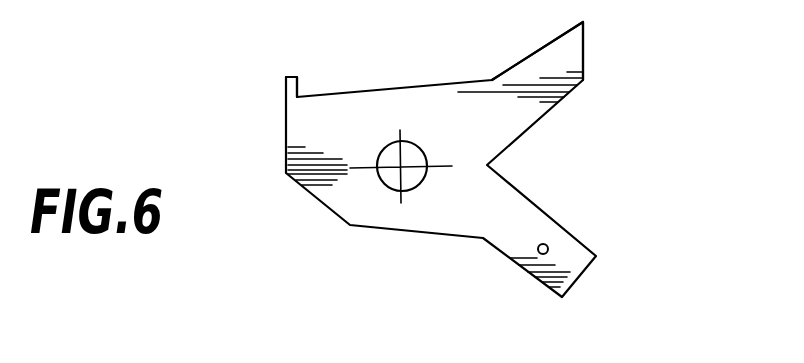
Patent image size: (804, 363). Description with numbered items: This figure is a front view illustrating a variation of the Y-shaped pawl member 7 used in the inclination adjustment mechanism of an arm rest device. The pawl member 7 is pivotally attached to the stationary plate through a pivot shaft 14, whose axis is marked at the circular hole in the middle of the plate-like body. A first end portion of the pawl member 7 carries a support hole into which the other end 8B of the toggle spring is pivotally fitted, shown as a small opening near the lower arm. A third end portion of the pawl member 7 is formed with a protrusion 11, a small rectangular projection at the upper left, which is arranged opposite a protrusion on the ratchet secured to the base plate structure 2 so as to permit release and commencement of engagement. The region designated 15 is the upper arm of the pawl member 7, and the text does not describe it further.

The pawl member 7 is at (427, 207).
The protrusion 11 is at (284, 90).
The upper wing portion 15 is at (573, 50).
The base plate structure 2 is at (402, 166).
The pivot shaft 14 is at (398, 170).
The other end of toggle spring 8B is at (547, 243).